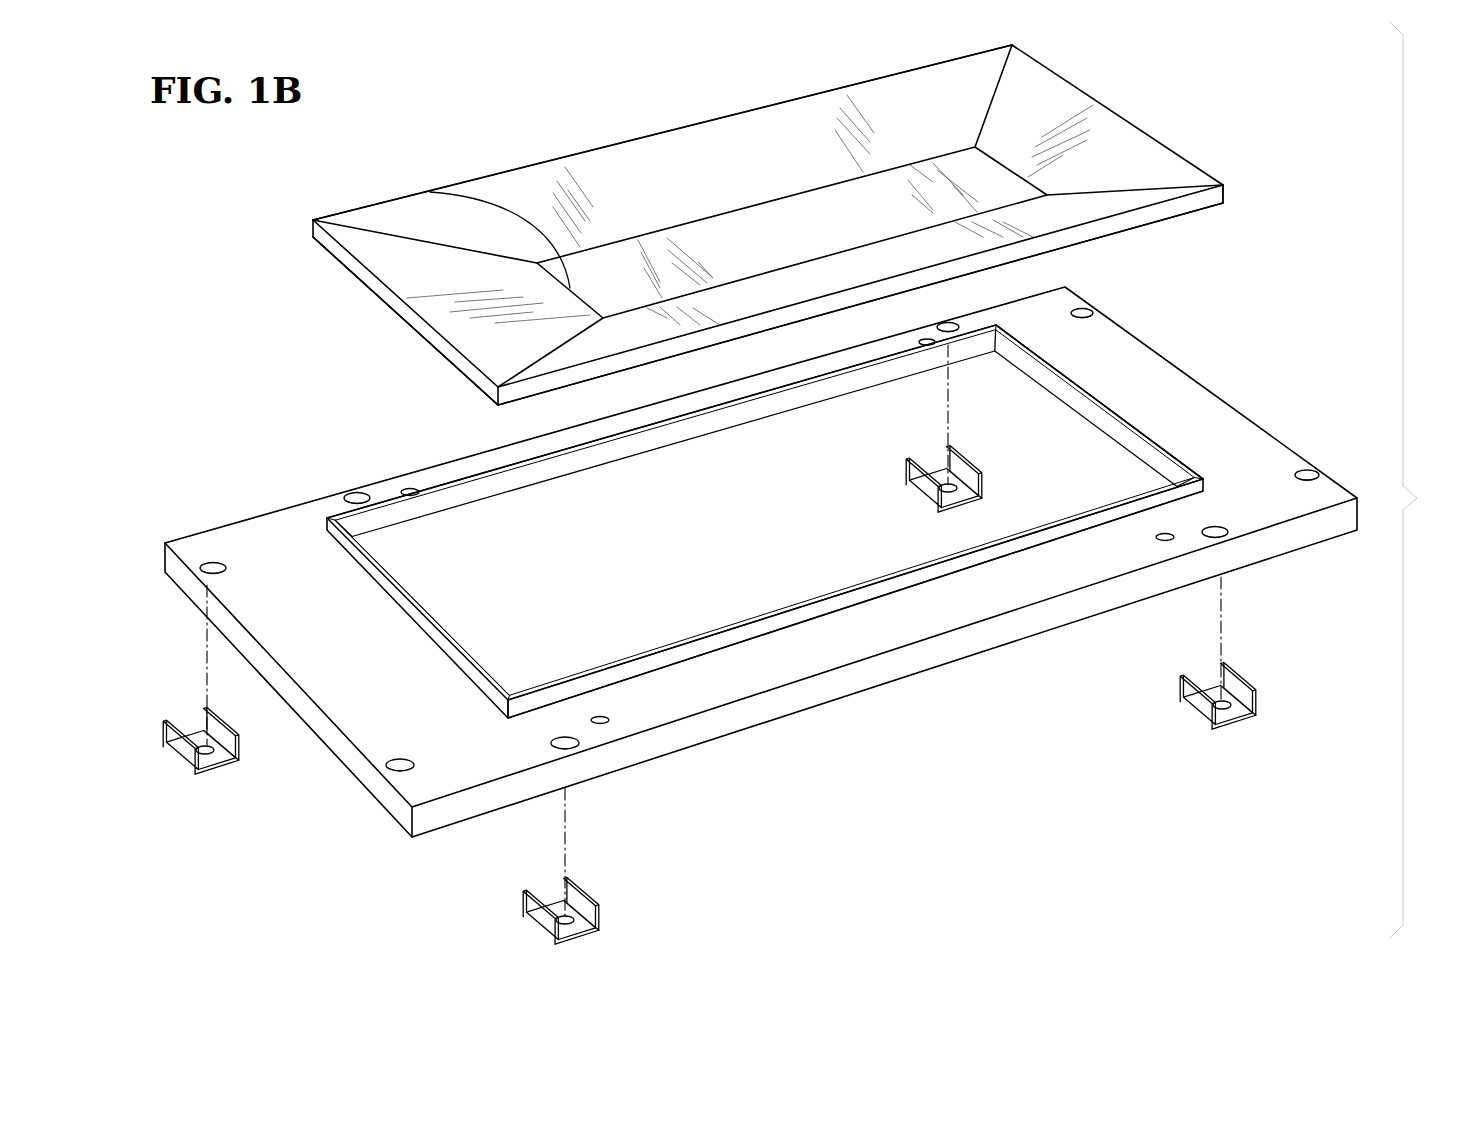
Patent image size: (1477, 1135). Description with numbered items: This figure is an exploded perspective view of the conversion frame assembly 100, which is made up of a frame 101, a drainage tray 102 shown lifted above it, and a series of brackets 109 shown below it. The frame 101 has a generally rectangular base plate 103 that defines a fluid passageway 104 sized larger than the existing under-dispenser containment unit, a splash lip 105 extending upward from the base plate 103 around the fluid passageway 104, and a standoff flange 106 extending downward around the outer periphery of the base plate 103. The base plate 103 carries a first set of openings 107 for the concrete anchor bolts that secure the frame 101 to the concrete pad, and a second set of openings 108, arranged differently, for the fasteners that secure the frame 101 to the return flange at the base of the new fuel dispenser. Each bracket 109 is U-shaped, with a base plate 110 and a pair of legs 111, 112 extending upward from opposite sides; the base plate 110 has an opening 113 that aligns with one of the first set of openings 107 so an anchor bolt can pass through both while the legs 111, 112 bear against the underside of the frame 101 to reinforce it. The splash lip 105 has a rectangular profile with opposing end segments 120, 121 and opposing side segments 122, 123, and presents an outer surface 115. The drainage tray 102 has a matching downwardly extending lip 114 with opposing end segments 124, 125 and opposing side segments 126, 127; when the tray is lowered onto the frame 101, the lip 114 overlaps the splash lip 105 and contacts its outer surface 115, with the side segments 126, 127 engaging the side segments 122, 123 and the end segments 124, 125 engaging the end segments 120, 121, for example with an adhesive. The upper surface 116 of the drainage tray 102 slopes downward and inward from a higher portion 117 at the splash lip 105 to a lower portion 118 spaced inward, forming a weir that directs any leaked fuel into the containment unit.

The conversion frame assembly 100 is at (1433, 480).
The frame 101 is at (744, 596).
The drainage tray 102 is at (764, 214).
The base plate 103 is at (287, 594).
The fluid passageway 104 is at (822, 548).
The splash lip 105 is at (702, 648).
The standoff flange 106 is at (428, 828).
The first set of openings 107 is at (950, 322).
The second set of openings 108 is at (930, 345).
The brackets 109 is at (730, 646).
The base plate 110 is at (978, 503).
The leg 111 is at (920, 478).
The leg 112 is at (985, 458).
The opening 113 is at (945, 485).
The downwardly extending lip 114 is at (445, 345).
The outer surface 115 is at (795, 622).
The upper surface 116 is at (480, 286).
The higher portion 117 is at (663, 130).
The lower portion 118 is at (733, 203).
The end segment 120 is at (413, 602).
The end segment 121 is at (1153, 440).
The side segment 122 is at (555, 467).
The side segment 123 is at (833, 603).
The end segment 124 is at (393, 303).
The end segment 125 is at (1210, 177).
The side segment 126 is at (522, 168).
The side segment 127 is at (1128, 220).